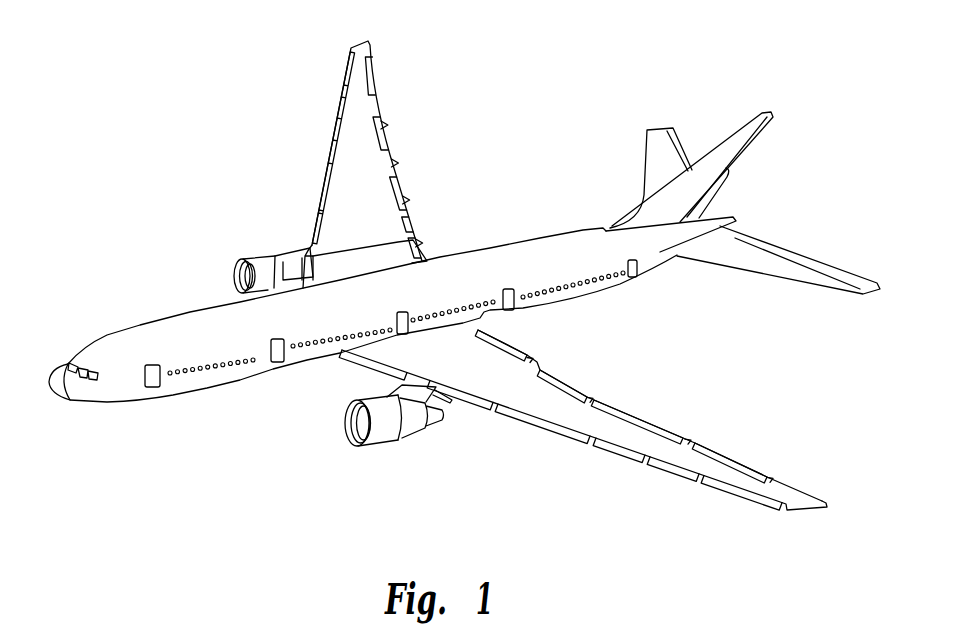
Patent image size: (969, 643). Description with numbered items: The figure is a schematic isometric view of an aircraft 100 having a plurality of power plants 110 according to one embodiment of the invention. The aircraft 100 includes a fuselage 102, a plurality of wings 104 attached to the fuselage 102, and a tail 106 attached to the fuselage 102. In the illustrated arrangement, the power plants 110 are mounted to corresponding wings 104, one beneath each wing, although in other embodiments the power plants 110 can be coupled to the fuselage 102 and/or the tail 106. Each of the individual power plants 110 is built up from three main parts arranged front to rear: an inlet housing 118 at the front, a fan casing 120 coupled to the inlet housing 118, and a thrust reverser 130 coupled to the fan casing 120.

The aircraft 100 is at (82, 202).
The fuselage 102 is at (185, 383).
The wings 104 is at (365, 167).
The tail 106 is at (727, 147).
The power plants 110 is at (314, 334).
The inlet housing 118 is at (237, 263).
The fan casing 120 is at (265, 257).
The thrust reverser 130 is at (292, 267).